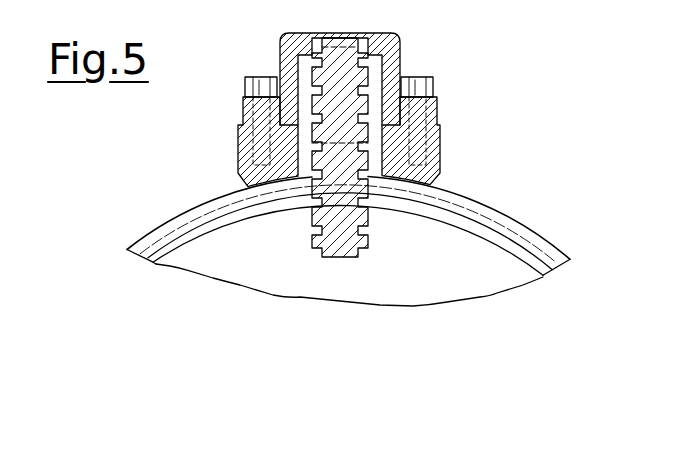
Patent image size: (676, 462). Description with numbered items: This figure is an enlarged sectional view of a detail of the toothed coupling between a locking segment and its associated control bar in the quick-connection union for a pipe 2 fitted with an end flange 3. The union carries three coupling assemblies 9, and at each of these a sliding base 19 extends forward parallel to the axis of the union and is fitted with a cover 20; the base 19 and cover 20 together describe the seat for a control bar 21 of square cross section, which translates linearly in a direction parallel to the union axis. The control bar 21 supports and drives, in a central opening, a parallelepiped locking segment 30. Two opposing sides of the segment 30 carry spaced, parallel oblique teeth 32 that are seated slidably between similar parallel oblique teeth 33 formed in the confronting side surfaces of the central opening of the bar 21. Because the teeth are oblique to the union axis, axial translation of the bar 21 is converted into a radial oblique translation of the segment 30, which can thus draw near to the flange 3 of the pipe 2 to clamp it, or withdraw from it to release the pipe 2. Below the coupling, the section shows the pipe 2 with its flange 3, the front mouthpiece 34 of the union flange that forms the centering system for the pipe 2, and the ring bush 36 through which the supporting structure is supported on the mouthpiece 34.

The pipe 2 is at (148, 232).
The end flange 3 is at (436, 284).
The coupling assemblies 9 is at (440, 97).
The sliding bases 19 is at (247, 164).
The covers 20 is at (284, 34).
The control bars 21 is at (390, 62).
The locking segments 30 is at (309, 237).
The teeth 32 is at (378, 52).
The teeth 33 is at (360, 88).
The front mouthpiece 34 is at (490, 223).
The ring bush 36 is at (548, 246).